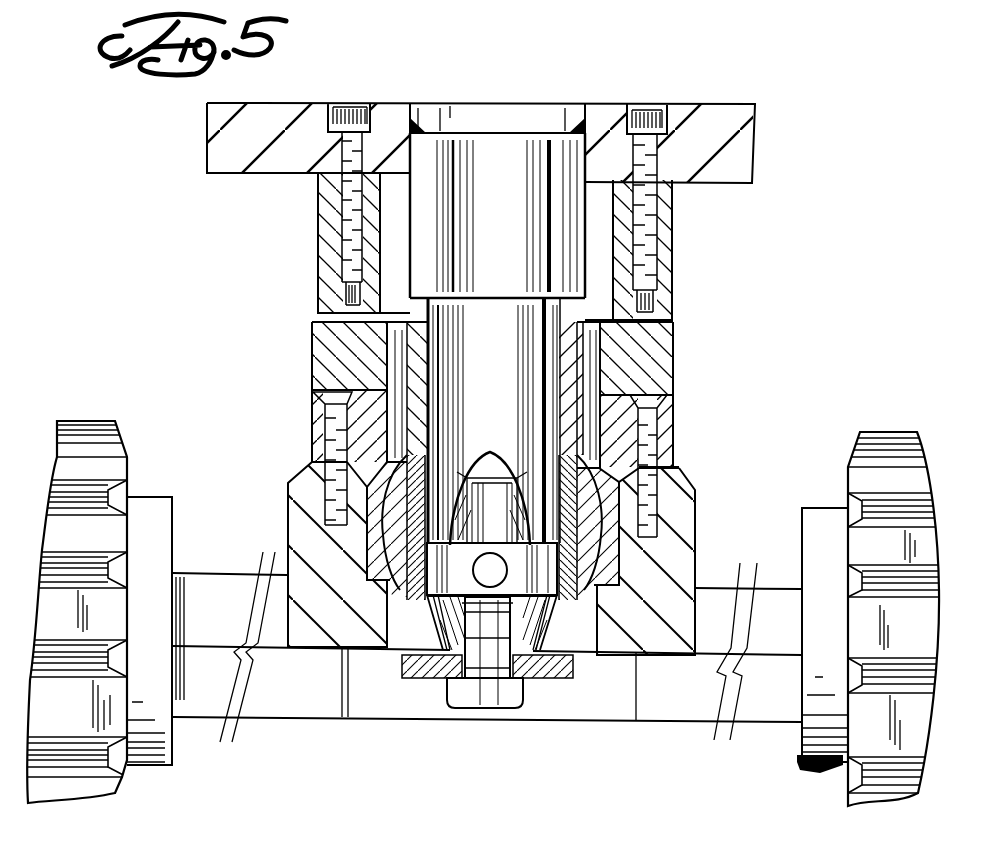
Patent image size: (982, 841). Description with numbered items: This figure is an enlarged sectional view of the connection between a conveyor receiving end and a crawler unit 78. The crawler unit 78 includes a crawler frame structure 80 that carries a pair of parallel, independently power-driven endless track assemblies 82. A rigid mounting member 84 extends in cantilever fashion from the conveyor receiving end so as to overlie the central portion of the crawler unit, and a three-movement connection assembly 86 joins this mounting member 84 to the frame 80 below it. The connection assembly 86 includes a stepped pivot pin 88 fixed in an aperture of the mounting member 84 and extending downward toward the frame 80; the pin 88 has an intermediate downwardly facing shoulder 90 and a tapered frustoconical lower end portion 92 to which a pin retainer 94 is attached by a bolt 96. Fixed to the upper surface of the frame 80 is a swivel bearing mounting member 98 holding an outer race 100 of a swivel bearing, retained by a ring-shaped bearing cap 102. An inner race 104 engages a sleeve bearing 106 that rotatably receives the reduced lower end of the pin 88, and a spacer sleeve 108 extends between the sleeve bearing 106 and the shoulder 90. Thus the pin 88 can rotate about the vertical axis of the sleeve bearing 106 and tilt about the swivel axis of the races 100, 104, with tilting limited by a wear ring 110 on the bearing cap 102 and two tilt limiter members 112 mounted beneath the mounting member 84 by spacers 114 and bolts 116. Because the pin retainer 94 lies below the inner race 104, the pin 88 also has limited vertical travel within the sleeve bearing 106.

The crawler unit 78 is at (872, 427).
The crawler frame structure 80 is at (647, 718).
The endless track assemblies 82 is at (105, 783).
The mounting member 84 is at (740, 177).
The connection assembly 86 is at (592, 107).
The pivot pin 88 is at (427, 246).
The shoulder 90 is at (597, 309).
The lower end portion 92 is at (428, 628).
The pin retainer 94 is at (557, 680).
The bolt 96 is at (470, 708).
The swivel bearing mounting member 98 is at (683, 531).
The outer race 100 is at (608, 567).
The bearing cap 102 is at (667, 439).
The inner race 104 is at (580, 511).
The sleeve bearing 106 is at (382, 555).
The spacer sleeve 108 is at (405, 343).
The wear ring 110 is at (667, 378).
The tilt limiter members 112 is at (666, 281).
The spacers 114 is at (318, 184).
The bolts 116 is at (352, 216).